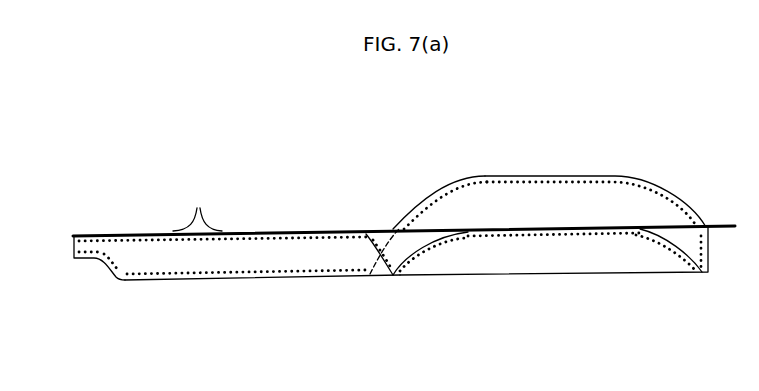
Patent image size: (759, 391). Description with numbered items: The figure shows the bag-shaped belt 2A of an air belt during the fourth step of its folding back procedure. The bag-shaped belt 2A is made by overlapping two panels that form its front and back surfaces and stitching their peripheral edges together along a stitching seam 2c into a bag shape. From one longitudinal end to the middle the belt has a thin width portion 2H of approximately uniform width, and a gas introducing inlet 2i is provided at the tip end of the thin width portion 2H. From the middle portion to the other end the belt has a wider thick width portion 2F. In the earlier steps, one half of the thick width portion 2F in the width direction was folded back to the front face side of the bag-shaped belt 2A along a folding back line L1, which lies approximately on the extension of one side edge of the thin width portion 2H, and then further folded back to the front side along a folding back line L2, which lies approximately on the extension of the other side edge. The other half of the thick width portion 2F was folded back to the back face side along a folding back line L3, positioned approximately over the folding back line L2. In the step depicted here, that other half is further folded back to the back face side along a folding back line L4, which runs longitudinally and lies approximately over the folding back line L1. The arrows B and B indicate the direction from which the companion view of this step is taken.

The bag-shaped belt 2A is at (297, 206).
The stitching seam 2c is at (197, 208).
The gas introducing inlet 2i is at (68, 249).
The thin width portion 2H is at (231, 263).
The thick width portion 2F is at (578, 284).
The folding back line L1 is at (393, 228).
The folding back line L2 is at (513, 273).
The folding back line L3 is at (393, 278).
The folding back line L4 is at (562, 228).
The arrows B is at (703, 153).